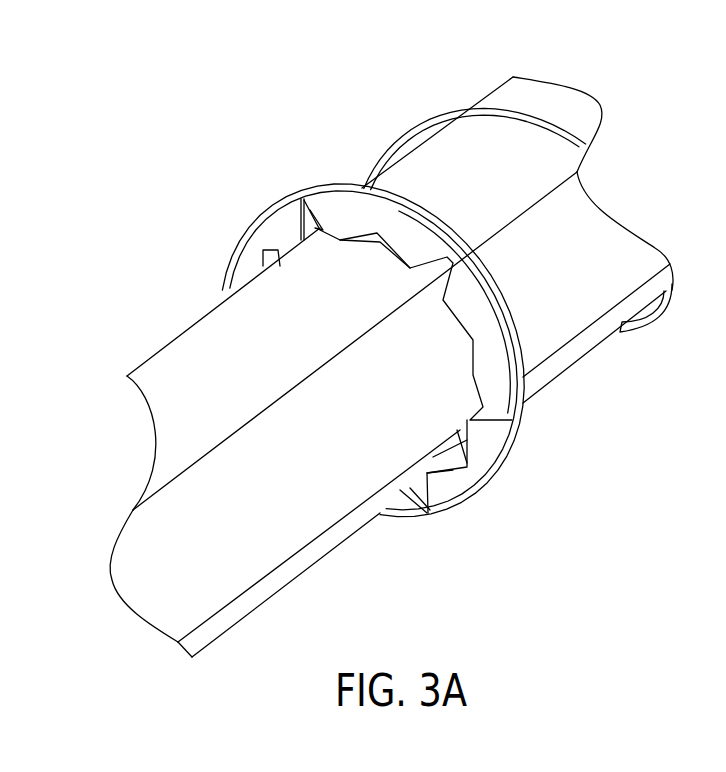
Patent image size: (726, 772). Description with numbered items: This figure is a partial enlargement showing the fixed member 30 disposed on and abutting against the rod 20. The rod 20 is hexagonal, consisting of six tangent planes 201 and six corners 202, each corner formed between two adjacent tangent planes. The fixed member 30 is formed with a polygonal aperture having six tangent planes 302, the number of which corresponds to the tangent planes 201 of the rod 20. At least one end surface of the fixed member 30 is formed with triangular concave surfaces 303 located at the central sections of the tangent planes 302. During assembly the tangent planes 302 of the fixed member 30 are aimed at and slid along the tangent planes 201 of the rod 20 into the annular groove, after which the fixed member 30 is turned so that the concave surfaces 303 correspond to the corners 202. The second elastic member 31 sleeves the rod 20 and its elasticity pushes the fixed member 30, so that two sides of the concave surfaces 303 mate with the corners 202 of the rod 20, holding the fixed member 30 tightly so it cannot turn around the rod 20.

The rod 20 is at (400, 537).
The tangent planes 201 is at (178, 415).
The corners 202 is at (185, 330).
The fixed member 30 is at (393, 313).
The tangent planes 302 is at (280, 247).
The concave surfaces 303 is at (300, 193).
The second elastic member 31 is at (457, 112).